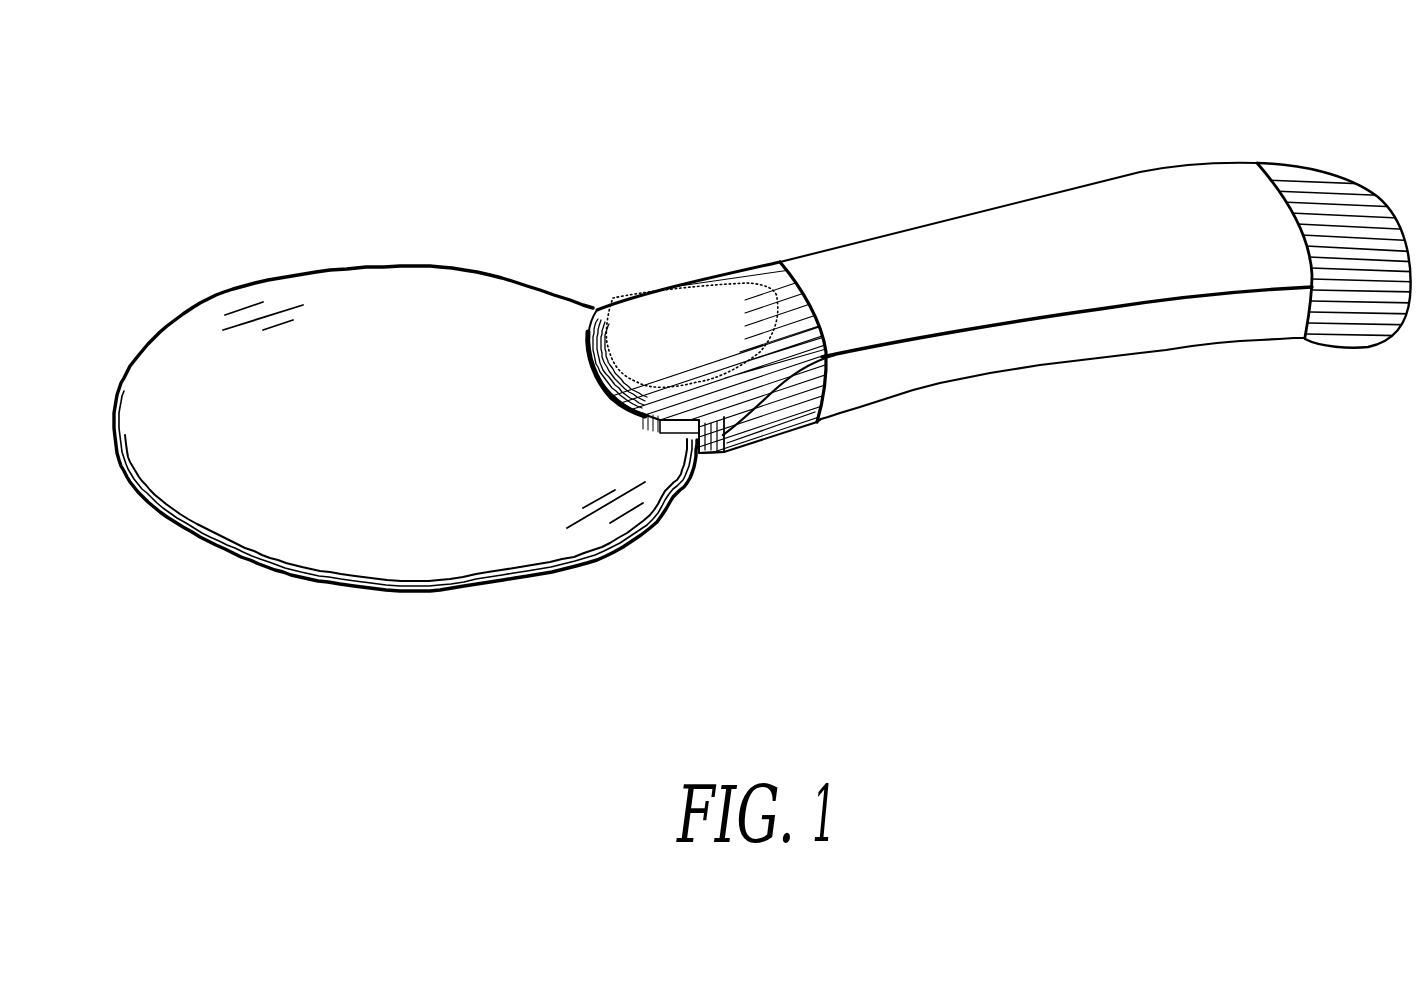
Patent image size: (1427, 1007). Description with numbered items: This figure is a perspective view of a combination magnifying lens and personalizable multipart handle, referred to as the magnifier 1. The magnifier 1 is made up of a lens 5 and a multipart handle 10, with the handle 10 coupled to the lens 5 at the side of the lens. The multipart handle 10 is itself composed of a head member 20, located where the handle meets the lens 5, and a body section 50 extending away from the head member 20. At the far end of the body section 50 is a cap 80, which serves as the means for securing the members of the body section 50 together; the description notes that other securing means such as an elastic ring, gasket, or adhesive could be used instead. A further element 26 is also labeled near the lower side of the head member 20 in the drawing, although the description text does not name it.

The magnifier 1 is at (915, 183).
The lens 5 is at (335, 518).
The multipart handle 10 is at (1025, 423).
The head member 20 is at (732, 290).
The tab 26 is at (720, 455).
The body section 50 is at (940, 367).
The cap 80 is at (1310, 200).